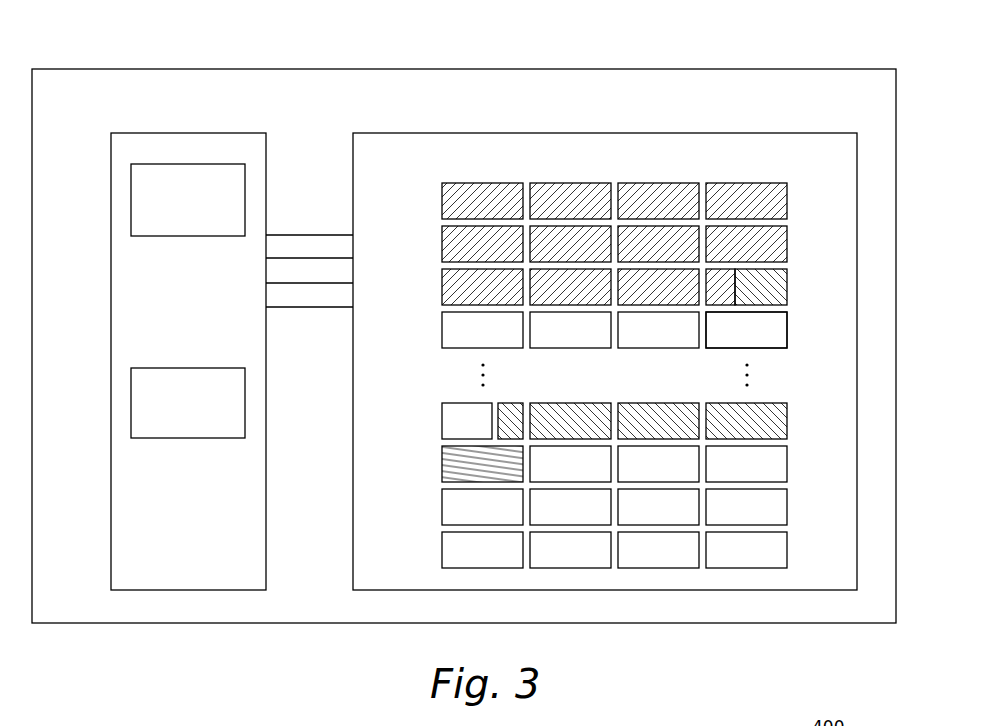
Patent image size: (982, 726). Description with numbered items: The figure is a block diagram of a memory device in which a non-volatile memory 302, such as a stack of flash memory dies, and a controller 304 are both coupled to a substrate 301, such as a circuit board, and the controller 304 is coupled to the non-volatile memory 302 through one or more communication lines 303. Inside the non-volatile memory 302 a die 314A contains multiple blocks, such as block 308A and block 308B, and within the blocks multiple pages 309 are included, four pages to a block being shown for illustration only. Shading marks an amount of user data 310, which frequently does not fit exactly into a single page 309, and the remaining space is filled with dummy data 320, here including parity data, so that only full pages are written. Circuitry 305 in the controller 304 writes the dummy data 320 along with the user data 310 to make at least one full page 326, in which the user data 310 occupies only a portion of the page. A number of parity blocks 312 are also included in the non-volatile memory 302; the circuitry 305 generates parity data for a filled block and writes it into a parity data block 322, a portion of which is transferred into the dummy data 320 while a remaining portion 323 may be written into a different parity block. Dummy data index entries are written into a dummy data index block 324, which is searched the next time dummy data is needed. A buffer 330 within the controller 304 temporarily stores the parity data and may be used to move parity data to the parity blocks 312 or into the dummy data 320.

The substrate 301 is at (463, 68).
The non-volatile memory 302 is at (603, 132).
The communication lines 303 is at (309, 308).
The controller 304 is at (185, 132).
The circuitry 305 is at (131, 179).
The buffer 330 is at (131, 381).
The block 308A is at (434, 183).
The block 308B is at (434, 226).
The page 309 is at (660, 182).
The user data 310 is at (747, 182).
The die 314A is at (523, 178).
The parity blocks 312 is at (434, 403).
The dummy data 320 is at (777, 287).
The parity data block 322 is at (777, 424).
The remaining portion of the parity block 323 is at (510, 408).
The dummy data index block 324 is at (465, 452).
The full page 326 is at (758, 317).